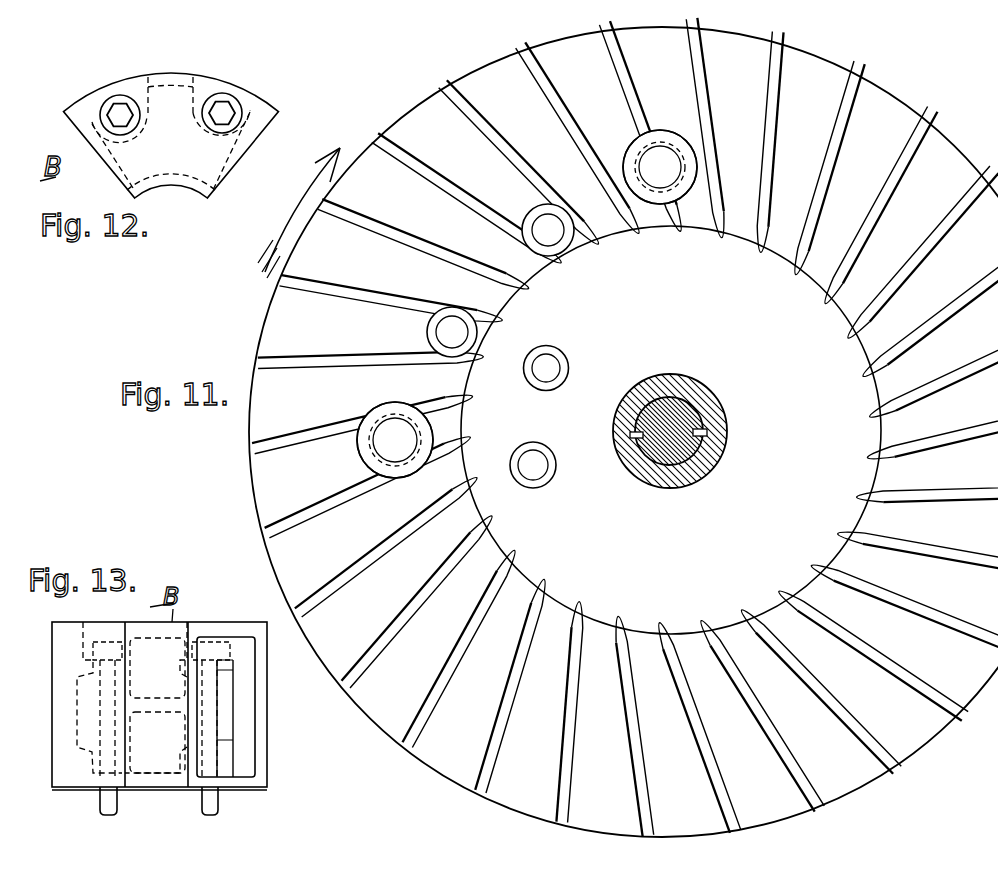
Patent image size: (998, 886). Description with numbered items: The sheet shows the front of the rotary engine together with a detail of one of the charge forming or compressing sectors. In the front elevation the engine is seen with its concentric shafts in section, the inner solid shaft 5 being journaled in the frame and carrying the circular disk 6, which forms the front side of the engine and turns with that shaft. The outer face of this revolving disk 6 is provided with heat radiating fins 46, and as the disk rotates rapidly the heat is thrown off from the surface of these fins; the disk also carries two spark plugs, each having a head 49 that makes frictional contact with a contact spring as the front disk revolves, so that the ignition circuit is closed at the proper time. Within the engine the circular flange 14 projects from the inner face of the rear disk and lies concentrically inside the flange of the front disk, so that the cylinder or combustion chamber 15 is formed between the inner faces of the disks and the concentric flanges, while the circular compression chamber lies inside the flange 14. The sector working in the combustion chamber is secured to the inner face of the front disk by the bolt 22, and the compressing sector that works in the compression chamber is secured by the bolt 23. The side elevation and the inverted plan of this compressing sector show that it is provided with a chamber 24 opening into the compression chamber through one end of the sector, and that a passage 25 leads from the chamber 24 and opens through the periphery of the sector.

In FIG. 11, the solid shaft 5 is at (700, 430).
In FIG. 11, the circular disk 6 is at (903, 104).
In FIG. 11, the circular flange 14 is at (643, 153).
In FIG. 11, the combustion chamber 15 is at (395, 443).
In FIG. 11, the bolt 22 is at (542, 221).
In FIG. 11, the bolt 23 is at (548, 368).
In FIG. 12, the bolt 23 is at (118, 108).
In FIG. 13, the bolt 23 is at (202, 798).
In FIG. 13, the chamber 24 is at (243, 713).
In FIG. 12, the passage 25 is at (193, 78).
In FIG. 11, the heat radiating fins 46 is at (969, 372).
In FIG. 11, the head 49 is at (665, 138).